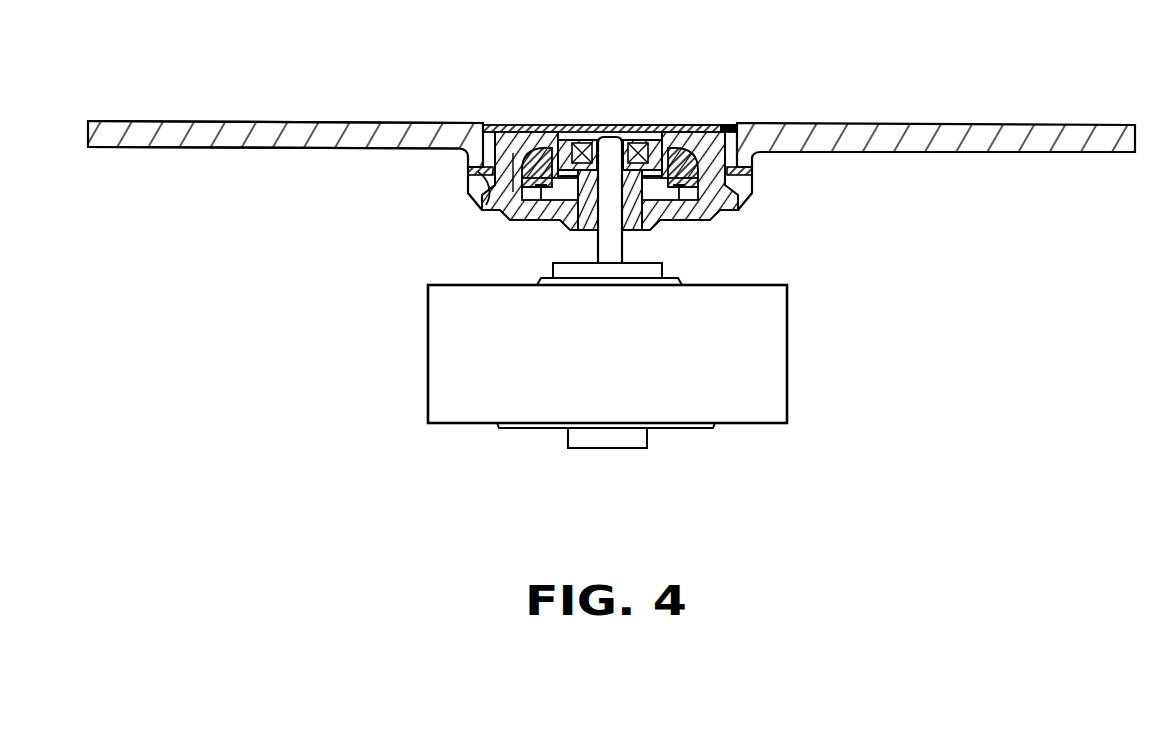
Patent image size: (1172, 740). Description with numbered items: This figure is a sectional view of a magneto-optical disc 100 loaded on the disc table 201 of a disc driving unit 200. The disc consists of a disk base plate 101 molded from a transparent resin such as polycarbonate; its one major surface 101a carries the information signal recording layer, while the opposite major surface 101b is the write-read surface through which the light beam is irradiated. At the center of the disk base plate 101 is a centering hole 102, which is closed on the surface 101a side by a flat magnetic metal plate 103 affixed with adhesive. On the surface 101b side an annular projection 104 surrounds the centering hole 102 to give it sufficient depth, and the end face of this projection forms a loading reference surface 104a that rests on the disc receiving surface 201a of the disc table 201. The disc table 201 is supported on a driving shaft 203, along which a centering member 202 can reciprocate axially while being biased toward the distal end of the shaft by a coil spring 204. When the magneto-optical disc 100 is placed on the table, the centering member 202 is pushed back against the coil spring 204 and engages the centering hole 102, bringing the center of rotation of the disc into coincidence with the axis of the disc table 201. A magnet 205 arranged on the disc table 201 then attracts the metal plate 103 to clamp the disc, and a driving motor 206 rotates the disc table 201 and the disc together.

The magneto-optical disc 100 is at (270, 132).
The disk base plate 101 is at (947, 135).
The major surface 101a is at (335, 123).
The other major surface 101b is at (290, 148).
The centering hole 102 is at (545, 123).
The magnetic metal plate 103 is at (668, 123).
The annular projection 104 is at (470, 203).
The loading reference surface 104a is at (497, 165).
The disc driving unit 200 is at (760, 443).
The disc table 201 is at (513, 221).
The disc receiving surface 201a is at (752, 166).
The centering member 202 is at (693, 124).
The driving shaft 203 is at (607, 247).
The coil spring 204 is at (720, 222).
The magnet 205 is at (578, 140).
The driving motor 206 is at (767, 353).